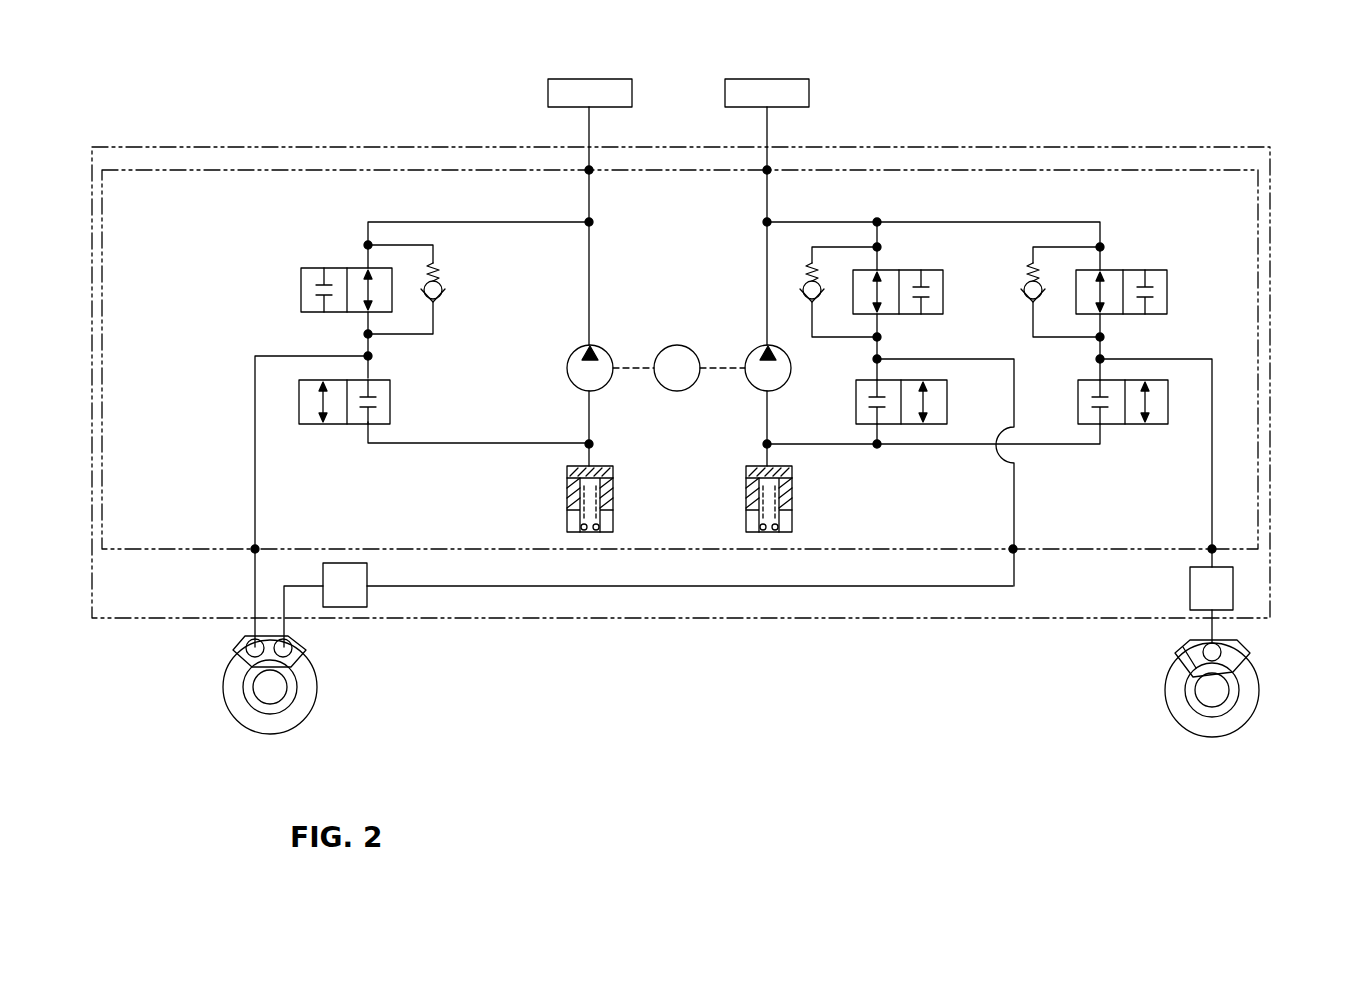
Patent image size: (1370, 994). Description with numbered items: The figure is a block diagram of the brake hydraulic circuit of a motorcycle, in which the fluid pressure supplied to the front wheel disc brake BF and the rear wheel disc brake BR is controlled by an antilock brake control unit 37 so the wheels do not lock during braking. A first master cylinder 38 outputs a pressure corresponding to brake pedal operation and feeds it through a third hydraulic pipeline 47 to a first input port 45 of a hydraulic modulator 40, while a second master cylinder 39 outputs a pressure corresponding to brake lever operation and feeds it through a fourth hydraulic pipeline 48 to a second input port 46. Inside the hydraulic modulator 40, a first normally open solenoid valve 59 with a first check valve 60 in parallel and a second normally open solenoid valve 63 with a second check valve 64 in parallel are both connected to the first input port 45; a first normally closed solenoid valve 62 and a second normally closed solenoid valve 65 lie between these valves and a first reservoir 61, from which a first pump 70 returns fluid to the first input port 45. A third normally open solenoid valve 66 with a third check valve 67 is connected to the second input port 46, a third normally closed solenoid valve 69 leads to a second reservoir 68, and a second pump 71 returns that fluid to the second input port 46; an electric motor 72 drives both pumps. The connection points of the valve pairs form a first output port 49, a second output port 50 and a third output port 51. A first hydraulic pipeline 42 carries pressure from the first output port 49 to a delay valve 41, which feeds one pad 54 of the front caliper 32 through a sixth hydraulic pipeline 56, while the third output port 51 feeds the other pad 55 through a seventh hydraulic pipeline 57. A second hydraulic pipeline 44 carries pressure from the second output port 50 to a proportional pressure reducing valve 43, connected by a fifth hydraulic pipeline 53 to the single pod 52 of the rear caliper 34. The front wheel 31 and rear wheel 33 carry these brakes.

The front wheel 31 is at (293, 715).
The caliper 32 is at (236, 647).
The rear wheel 33 is at (1242, 713).
The caliper 34 is at (1190, 660).
The antilock brake control unit 37 is at (822, 620).
The first master cylinder 38 is at (760, 79).
The second master cylinder 39 is at (600, 79).
The hydraulic modulator 40 is at (1127, 554).
The delay valve 41 is at (350, 598).
The first hydraulic pipeline 42 is at (640, 588).
The proportional pressure reducing valve 43 is at (1218, 592).
The second hydraulic pipeline 44 is at (1228, 560).
The first input port 45 is at (765, 172).
The second input port 46 is at (592, 172).
The third hydraulic pipeline 47 is at (769, 138).
The fourth hydraulic pipeline 48 is at (591, 138).
The first output port 49 is at (1010, 540).
The second output port 50 is at (1210, 540).
The third output port 51 is at (250, 542).
The pod 52 is at (1222, 649).
The fifth hydraulic pipeline 53 is at (1190, 640).
The pad 54 is at (303, 646).
The pad 55 is at (258, 690).
The sixth hydraulic pipeline 56 is at (288, 585).
The seventh hydraulic pipeline 57 is at (253, 570).
The first normally open solenoid valve 59 is at (930, 270).
The first check valve 60 is at (803, 283).
The first reservoir 61 is at (746, 490).
The first normally closed solenoid valve 62 is at (947, 415).
The second normally open solenoid valve 63 is at (1135, 270).
The second check valve 64 is at (1020, 296).
The second normally closed solenoid valve 65 is at (1130, 425).
The third normally open solenoid valve 66 is at (338, 268).
The third check valve 67 is at (445, 290).
The second reservoir 68 is at (567, 490).
The third normally closed solenoid valve 69 is at (391, 402).
The first pump 70 is at (756, 350).
The second pump 71 is at (572, 356).
The electric motor 72 is at (683, 345).
The front wheel disc brake BF is at (222, 688).
The rear wheel disc brake BR is at (1262, 686).